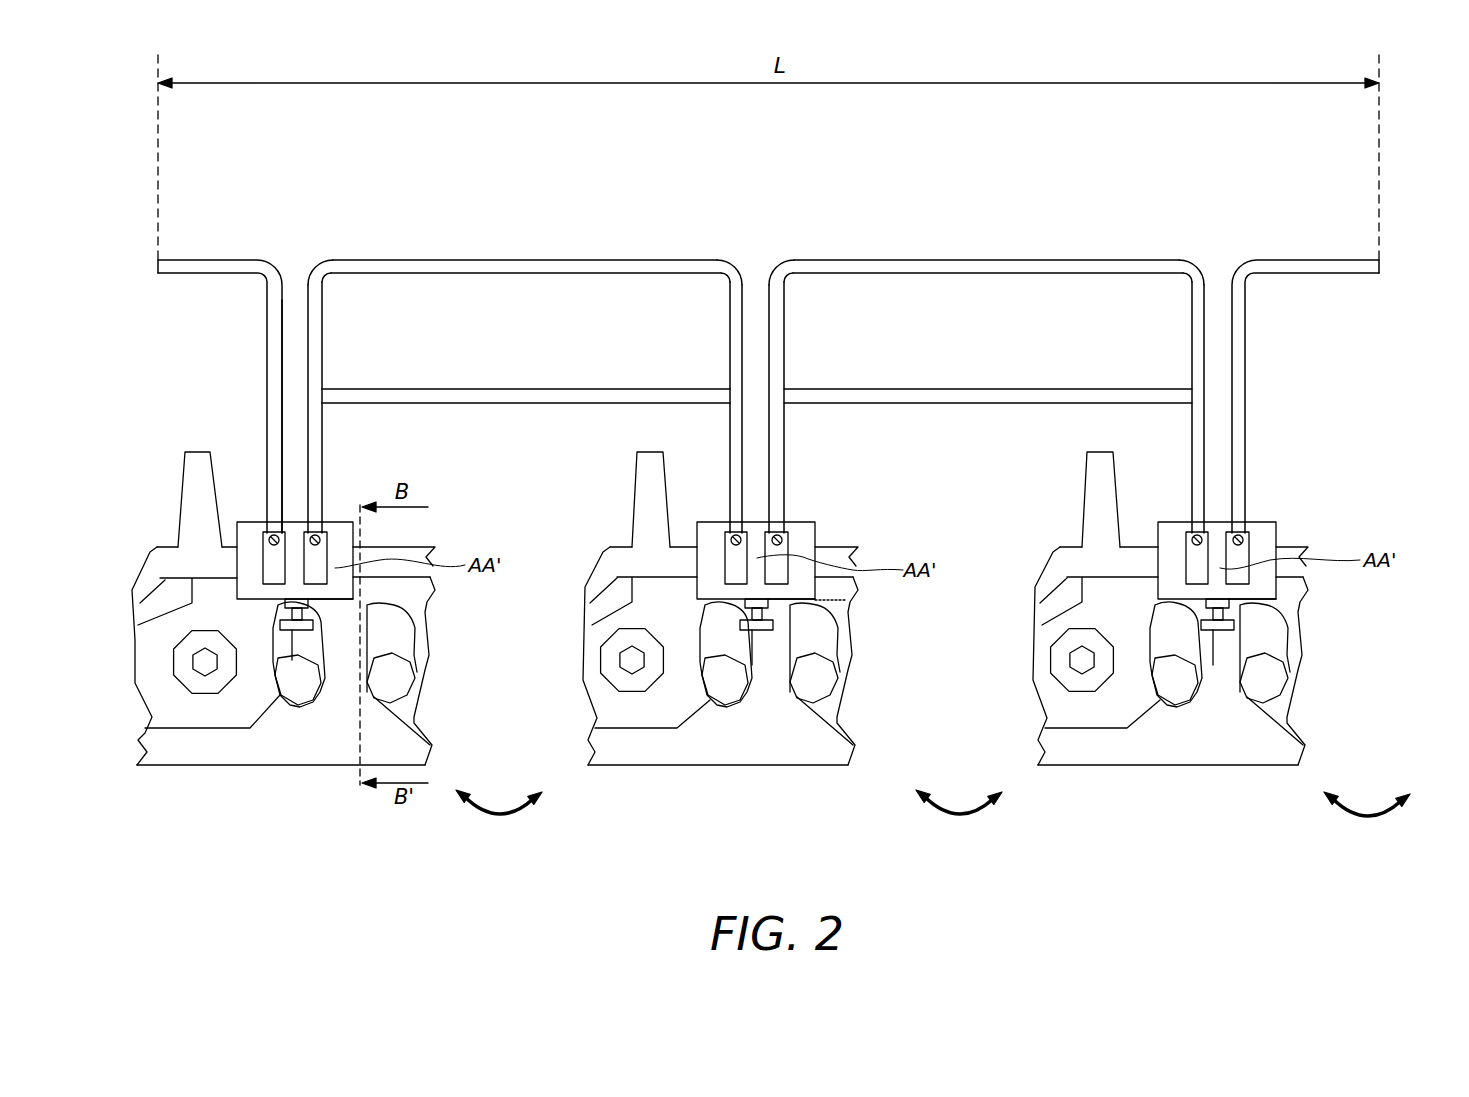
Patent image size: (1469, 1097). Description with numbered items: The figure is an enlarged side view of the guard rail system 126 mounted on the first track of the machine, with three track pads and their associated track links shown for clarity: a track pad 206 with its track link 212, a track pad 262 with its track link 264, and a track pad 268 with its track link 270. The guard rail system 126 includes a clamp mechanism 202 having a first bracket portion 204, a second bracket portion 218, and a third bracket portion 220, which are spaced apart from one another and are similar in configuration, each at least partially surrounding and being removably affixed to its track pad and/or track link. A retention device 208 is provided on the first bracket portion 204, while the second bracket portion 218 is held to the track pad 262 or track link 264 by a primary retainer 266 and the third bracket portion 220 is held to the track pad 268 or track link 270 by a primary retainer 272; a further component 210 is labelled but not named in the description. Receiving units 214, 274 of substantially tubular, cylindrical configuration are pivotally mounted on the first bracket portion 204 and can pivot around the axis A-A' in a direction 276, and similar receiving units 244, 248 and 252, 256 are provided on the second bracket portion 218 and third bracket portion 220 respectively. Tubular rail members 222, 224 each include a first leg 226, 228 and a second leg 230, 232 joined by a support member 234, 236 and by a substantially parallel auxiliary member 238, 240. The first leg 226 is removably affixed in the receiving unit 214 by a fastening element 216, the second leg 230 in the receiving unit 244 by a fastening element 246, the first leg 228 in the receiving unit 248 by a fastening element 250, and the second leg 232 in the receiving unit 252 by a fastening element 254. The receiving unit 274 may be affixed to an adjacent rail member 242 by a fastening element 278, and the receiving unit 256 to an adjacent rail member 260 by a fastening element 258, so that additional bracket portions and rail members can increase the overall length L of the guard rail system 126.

The guard rail system 126 is at (1232, 142).
The clamp mechanism 202 is at (250, 612).
The first bracket portion 204 is at (317, 601).
The track pad 206 is at (430, 558).
The retention device 208 is at (272, 643).
The valve stem 210 is at (283, 633).
The track link 212 is at (335, 750).
The receiving unit 214 is at (341, 615).
The fastening element 216 is at (322, 524).
The second bracket portion 218 is at (806, 609).
The third bracket portion 220 is at (1266, 611).
The rail member 222 is at (525, 355).
The rail member 224 is at (986, 355).
The first leg 226 is at (310, 323).
The first leg 228 is at (786, 430).
The second leg 230 is at (729, 423).
The second leg 232 is at (1191, 423).
The support member 234 is at (640, 260).
The support member 236 is at (1088, 260).
The auxiliary member 238 is at (503, 389).
The auxiliary member 240 is at (975, 389).
The adjacent rail member 242 is at (203, 252).
The receiving unit 244 is at (717, 555).
The fastening element 246 is at (733, 533).
The receiving unit 248 is at (817, 602).
The fastening element 250 is at (783, 537).
The receiving unit 252 is at (1214, 558).
The fastening element 254 is at (1194, 533).
The receiving unit 256 is at (1254, 567).
The fastening element 258 is at (1250, 533).
The adjacent rail member 260 is at (1290, 252).
The track pad 262 is at (842, 547).
The track link 264 is at (830, 753).
The primary retainer 266 is at (770, 607).
The track pad 268 is at (1290, 547).
The track link 270 is at (1272, 756).
The primary retainer 272 is at (1217, 632).
The receiving unit 274 is at (272, 567).
The direction 276 is at (499, 812).
The fastening element 278 is at (270, 541).